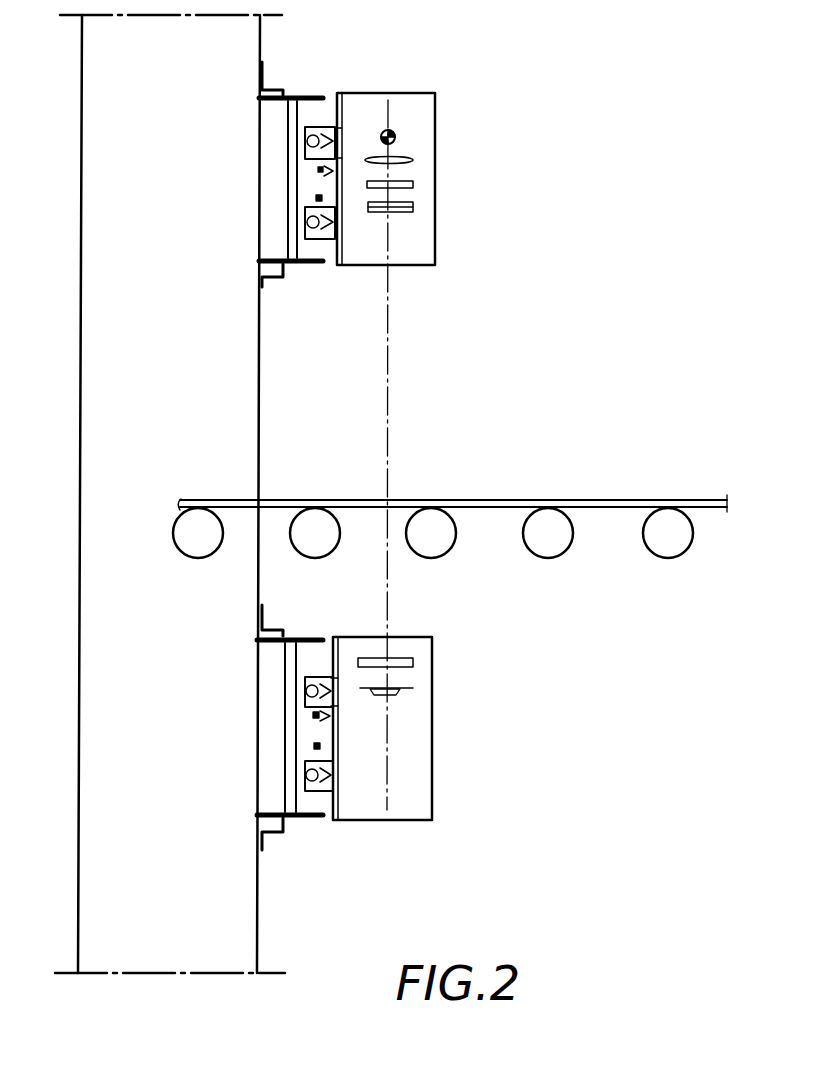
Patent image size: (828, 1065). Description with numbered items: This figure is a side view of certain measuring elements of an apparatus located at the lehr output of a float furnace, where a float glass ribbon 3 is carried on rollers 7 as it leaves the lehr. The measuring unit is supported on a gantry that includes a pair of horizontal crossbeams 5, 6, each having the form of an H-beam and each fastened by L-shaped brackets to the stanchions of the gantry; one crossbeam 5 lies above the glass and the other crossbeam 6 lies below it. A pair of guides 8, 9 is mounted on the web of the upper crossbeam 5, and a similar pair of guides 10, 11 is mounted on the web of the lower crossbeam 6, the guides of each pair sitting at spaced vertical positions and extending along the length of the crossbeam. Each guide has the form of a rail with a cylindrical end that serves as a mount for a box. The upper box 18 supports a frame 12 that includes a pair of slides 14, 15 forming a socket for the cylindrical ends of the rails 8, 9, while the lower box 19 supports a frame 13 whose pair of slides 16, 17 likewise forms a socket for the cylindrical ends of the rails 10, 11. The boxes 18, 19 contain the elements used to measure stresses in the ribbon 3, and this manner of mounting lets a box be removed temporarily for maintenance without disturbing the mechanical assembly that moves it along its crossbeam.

The float glass ribbon 3 is at (632, 498).
The crossbeam 5 is at (310, 95).
The crossbeam 6 is at (308, 820).
The rollers 7 is at (667, 542).
The guide 8 is at (305, 137).
The guide 9 is at (310, 222).
The guide 10 is at (305, 682).
The guide 11 is at (308, 772).
The frame 12 is at (336, 93).
The frame 13 is at (332, 637).
The slide 14 is at (340, 128).
The slide 15 is at (316, 198).
The slide 16 is at (333, 677).
The slide 17 is at (312, 758).
The box 18 is at (437, 110).
The box 19 is at (433, 675).